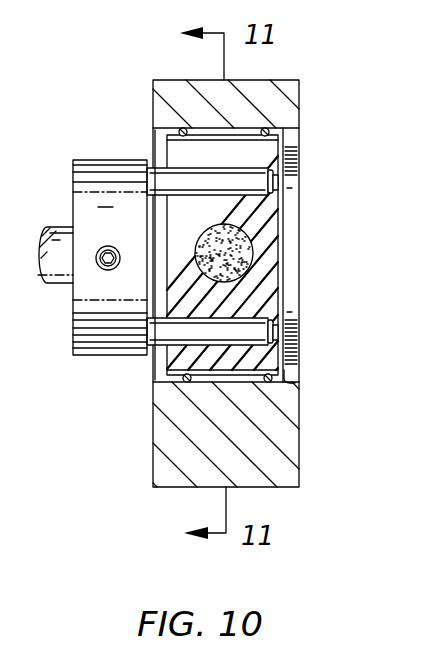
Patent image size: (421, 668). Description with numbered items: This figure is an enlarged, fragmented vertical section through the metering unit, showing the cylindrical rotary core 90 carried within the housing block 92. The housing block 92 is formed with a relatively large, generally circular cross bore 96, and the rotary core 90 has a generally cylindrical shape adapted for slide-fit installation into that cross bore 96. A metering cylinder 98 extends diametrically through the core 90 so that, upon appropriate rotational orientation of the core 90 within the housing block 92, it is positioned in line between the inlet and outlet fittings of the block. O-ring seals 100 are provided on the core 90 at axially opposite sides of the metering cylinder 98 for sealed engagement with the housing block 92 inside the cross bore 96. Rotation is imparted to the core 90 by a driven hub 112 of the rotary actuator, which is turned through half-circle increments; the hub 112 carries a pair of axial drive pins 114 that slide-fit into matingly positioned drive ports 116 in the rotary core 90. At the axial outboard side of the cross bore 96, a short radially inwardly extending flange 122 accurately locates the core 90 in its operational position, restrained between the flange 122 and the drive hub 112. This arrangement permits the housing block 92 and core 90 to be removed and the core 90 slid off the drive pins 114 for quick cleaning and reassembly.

The rotary core 90 is at (281, 268).
The housing block 92 is at (292, 440).
The cross bore 96 is at (158, 374).
The metering cylinder 98 is at (249, 235).
The O-ring seals 100 is at (271, 379).
The driven hub 112 is at (93, 355).
The axial drive pins 114 is at (166, 172).
The drive ports 116 is at (297, 176).
The flange 122 is at (296, 130).